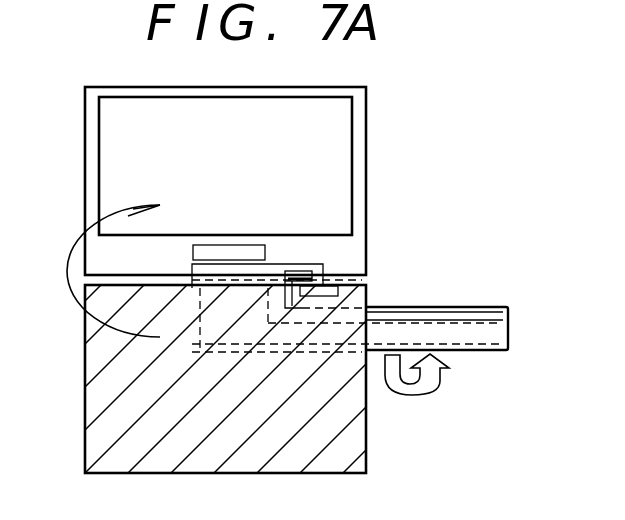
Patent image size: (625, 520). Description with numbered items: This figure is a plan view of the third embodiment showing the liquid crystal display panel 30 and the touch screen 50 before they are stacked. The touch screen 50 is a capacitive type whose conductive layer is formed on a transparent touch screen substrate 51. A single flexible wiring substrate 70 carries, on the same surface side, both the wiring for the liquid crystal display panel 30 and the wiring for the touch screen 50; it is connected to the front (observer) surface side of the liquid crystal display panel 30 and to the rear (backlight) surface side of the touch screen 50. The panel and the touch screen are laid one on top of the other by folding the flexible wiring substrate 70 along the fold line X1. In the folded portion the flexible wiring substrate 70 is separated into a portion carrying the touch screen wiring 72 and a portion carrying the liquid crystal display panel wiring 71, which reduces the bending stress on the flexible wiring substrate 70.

The liquid crystal display panel 30 is at (85, 147).
The touch screen 50 is at (85, 367).
The touch screen substrate 51 is at (239, 247).
The flexible wiring substrate 70 is at (362, 332).
The liquid crystal display panel wiring 71 is at (453, 337).
The touch screen wiring 72 is at (482, 310).
The fold line X1 is at (297, 306).